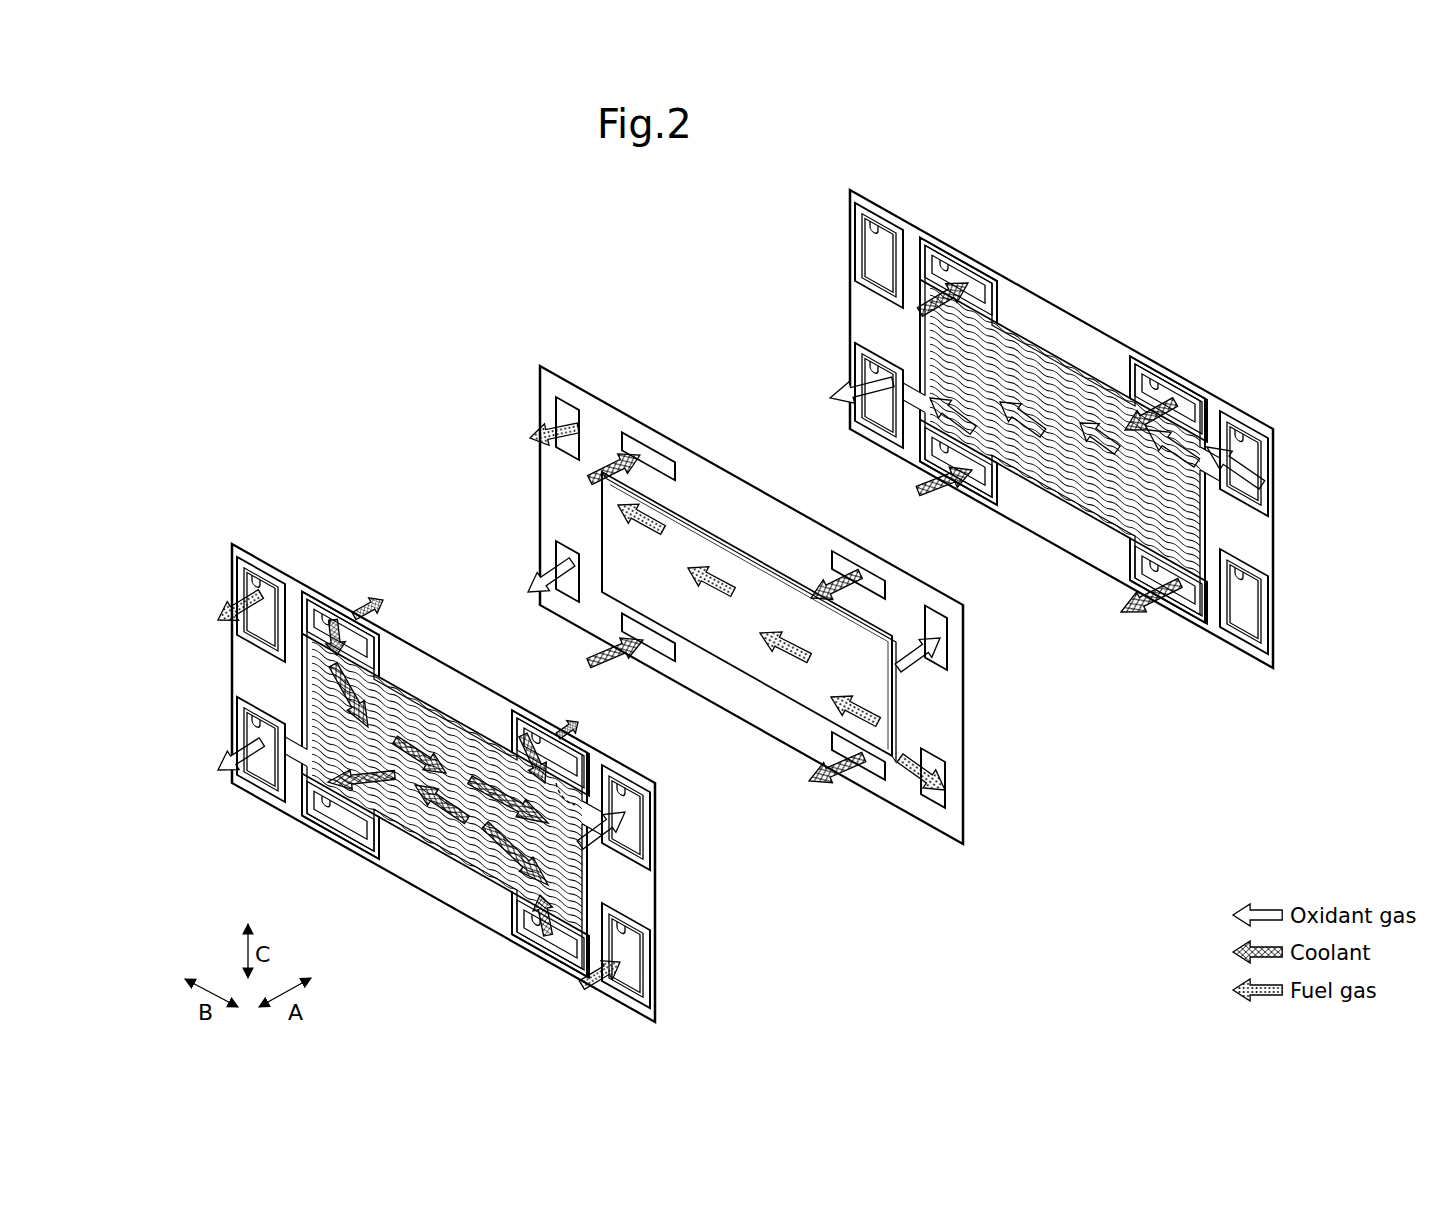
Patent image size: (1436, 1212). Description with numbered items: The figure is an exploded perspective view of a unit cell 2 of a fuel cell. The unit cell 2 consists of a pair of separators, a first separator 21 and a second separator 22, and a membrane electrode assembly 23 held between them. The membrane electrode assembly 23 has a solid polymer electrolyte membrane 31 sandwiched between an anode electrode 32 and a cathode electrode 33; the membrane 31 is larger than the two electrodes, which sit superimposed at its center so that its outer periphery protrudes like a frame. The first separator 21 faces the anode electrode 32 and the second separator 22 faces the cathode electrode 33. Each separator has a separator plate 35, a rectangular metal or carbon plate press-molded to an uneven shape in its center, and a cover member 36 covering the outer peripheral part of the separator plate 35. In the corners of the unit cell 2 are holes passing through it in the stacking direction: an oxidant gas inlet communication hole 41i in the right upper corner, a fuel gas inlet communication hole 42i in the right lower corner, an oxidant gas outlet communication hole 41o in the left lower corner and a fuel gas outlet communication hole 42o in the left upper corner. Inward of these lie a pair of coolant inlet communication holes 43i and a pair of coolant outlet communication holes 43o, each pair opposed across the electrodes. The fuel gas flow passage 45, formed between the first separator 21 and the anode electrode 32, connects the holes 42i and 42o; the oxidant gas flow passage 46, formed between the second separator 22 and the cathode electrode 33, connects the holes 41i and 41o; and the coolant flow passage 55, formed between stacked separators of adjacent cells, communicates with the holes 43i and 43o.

The unit cell 2 is at (645, 296).
The first separator 21 is at (478, 783).
The second separator 22 is at (1050, 429).
The membrane electrode assembly 23 is at (742, 568).
The solid polymer electrolyte membrane 31 is at (692, 458).
The anode electrode 32 is at (714, 520).
The cathode electrode 33 is at (760, 560).
The separator plate 35 is at (1045, 360).
The cover member 36 is at (1015, 300).
The oxidant gas inlet communication hole 41i is at (1256, 450).
The oxidant gas outlet communication hole 41o is at (872, 372).
The fuel gas inlet communication hole 42i is at (1255, 603).
The fuel gas outlet communication hole 42o is at (872, 240).
The coolant inlet communication hole 43i is at (1150, 382).
The coolant outlet communication hole 43o is at (950, 268).
The fuel gas flow passage 45 is at (556, 783).
The oxidant gas flow passage 46 is at (1100, 420).
The coolant flow passage 55 is at (455, 812).